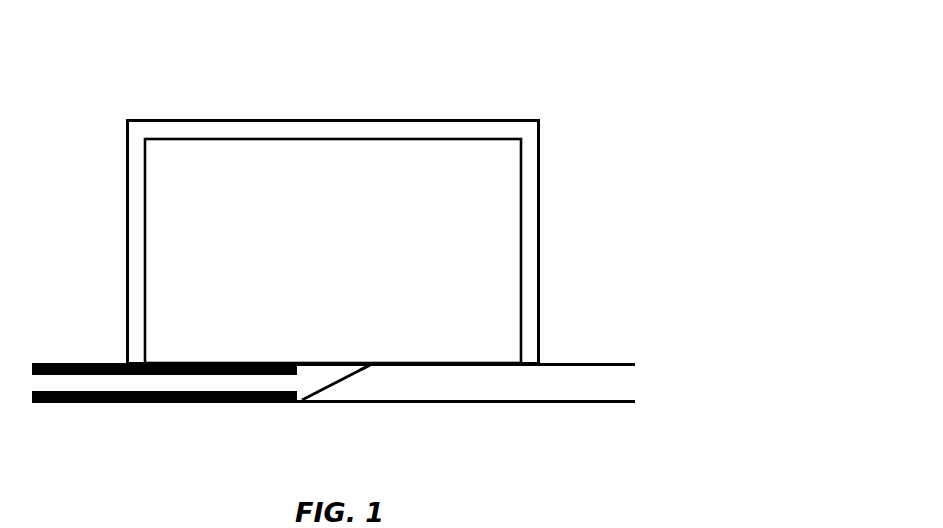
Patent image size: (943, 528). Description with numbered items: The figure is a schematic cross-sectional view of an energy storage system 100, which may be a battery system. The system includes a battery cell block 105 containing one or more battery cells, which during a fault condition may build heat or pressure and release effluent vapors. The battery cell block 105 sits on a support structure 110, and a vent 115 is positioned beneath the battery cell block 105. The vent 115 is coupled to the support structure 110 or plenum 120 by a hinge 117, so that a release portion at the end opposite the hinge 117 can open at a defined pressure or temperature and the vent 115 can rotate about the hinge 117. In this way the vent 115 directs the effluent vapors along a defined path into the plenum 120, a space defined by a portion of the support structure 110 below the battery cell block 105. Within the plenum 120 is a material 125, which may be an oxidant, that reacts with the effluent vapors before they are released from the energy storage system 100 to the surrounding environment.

The energy storage system 100 is at (183, 81).
The battery cell block 105 is at (423, 138).
The support structure 110 is at (314, 120).
The vent 115 is at (322, 393).
The hinge 117 is at (368, 362).
The plenum 120 is at (455, 402).
The material 125 is at (135, 403).